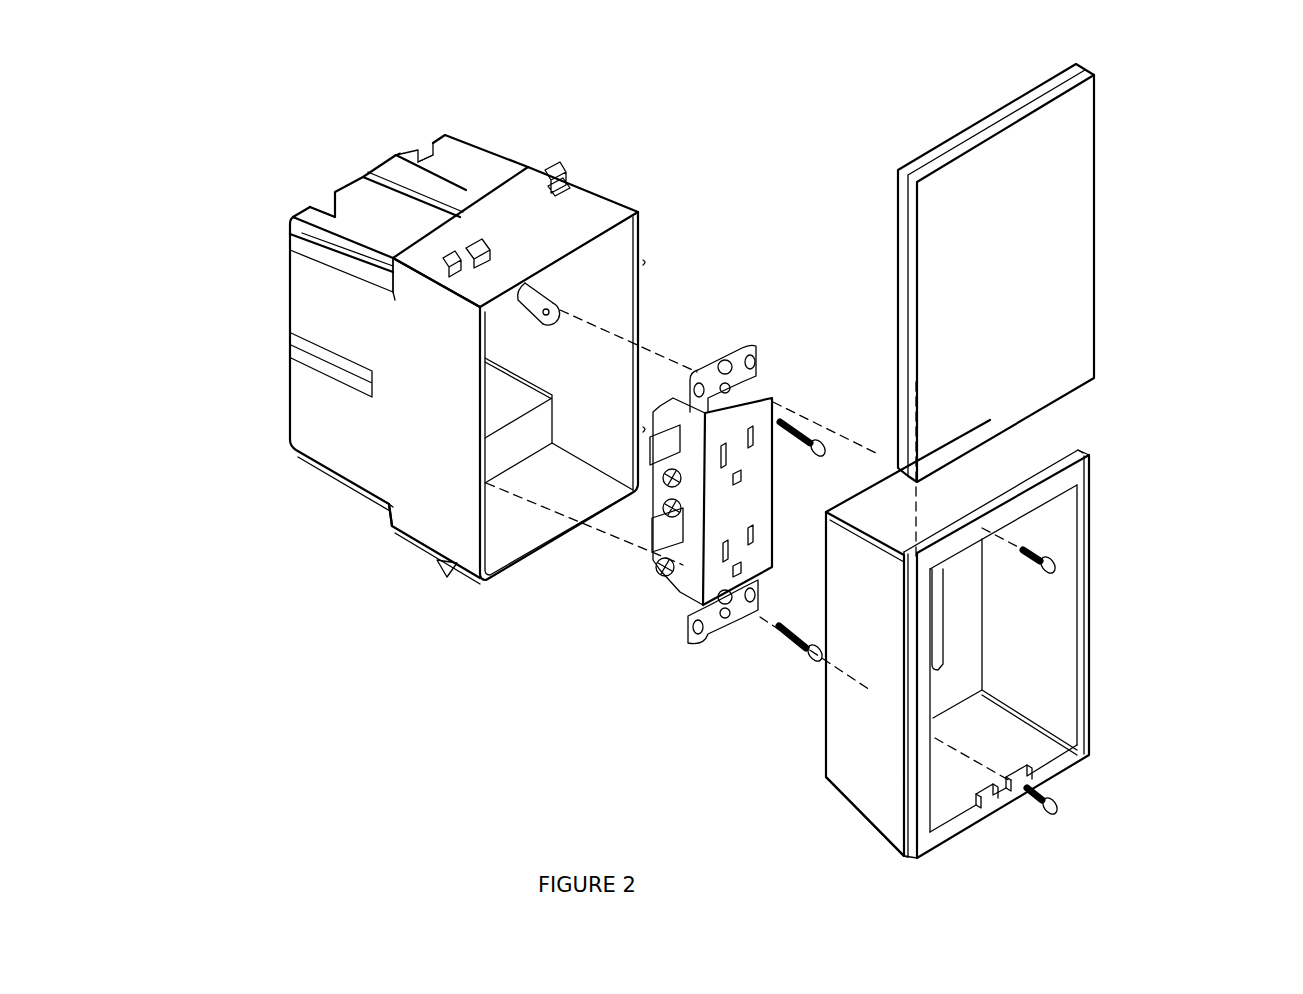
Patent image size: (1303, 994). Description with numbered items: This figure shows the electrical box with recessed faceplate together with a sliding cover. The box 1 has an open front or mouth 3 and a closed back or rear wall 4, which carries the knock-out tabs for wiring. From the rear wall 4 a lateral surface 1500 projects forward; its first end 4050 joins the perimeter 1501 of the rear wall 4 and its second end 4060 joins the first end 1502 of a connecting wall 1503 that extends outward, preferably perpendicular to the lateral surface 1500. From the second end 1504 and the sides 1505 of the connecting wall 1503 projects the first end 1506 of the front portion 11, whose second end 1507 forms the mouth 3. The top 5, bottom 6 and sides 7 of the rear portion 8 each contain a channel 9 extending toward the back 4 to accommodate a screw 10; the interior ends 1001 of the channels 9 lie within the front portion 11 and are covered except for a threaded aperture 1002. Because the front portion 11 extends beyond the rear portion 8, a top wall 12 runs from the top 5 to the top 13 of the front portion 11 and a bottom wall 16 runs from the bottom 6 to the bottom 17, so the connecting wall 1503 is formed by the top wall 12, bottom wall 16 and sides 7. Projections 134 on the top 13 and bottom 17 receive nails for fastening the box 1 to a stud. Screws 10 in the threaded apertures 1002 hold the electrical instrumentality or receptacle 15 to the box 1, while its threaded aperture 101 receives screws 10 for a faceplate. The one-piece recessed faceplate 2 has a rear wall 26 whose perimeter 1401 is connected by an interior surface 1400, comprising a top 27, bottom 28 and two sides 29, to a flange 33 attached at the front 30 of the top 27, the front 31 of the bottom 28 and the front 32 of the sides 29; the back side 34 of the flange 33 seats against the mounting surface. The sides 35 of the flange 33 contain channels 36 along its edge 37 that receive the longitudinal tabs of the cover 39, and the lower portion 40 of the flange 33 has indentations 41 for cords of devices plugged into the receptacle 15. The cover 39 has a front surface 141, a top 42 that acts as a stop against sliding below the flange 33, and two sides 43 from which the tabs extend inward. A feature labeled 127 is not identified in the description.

The box 1 is at (651, 102).
The one-piece recessed faceplate 2 is at (1212, 743).
The mouth 3 is at (645, 258).
The rear wall 4 is at (352, 177).
The top of rear portion 5 is at (352, 200).
The bottom of rear portion 6 is at (308, 465).
The sides 7 is at (296, 370).
The rear portion 8 is at (450, 140).
The channel 9 is at (365, 177).
The screw 10 is at (797, 420).
The front portion 11 is at (573, 190).
The top wall 12 is at (418, 253).
The top of front portion 13 is at (590, 202).
The electrical instrumentality 15 is at (690, 590).
The bottom wall 16 is at (388, 515).
The bottom of front portion 17 is at (413, 545).
The rear wall of faceplate 26 is at (960, 617).
The top of interior surface 27 is at (875, 489).
The bottom of interior surface 28 is at (1008, 797).
The sides of interior surface 29 is at (841, 725).
The front of top 30 is at (1047, 503).
The front of bottom 31 is at (947, 798).
The front of sides 32 is at (927, 753).
The flange 33 is at (918, 693).
The back side of flange 34 is at (904, 830).
The sides of flange 35 is at (920, 843).
The channels of flange 36 is at (904, 855).
The edge of flange 37 is at (897, 600).
The cover 39 is at (1197, 105).
The lower portion of flange 40 is at (1058, 775).
The indentations 41 is at (985, 780).
The top of cover 42 is at (1017, 98).
The sides of cover 43 is at (901, 250).
The threaded aperture of electrical instrumentality 101 is at (727, 362).
The slot 127 is at (947, 633).
The projections 134 is at (560, 155).
The front surface of cover 141 is at (1031, 254).
The interior ends of channels 1001 is at (553, 308).
The threaded aperture 1002 is at (557, 315).
The interior surface 1400 is at (848, 768).
The perimeter of faceplate rear wall 1401 is at (983, 653).
The lateral surface 1500 is at (485, 162).
The perimeter of rear wall 1501 is at (383, 167).
The first end of connecting wall 1502 is at (392, 292).
The connecting wall 1503 is at (392, 273).
The second end of connecting wall 1504 is at (415, 235).
The sides of connecting wall 1505 is at (392, 275).
The first end of front portion 1506 is at (393, 533).
The second end of front portion 1507 is at (627, 210).
The first end of lateral surface 4050 is at (440, 132).
The second end of lateral surface 4060 is at (387, 303).